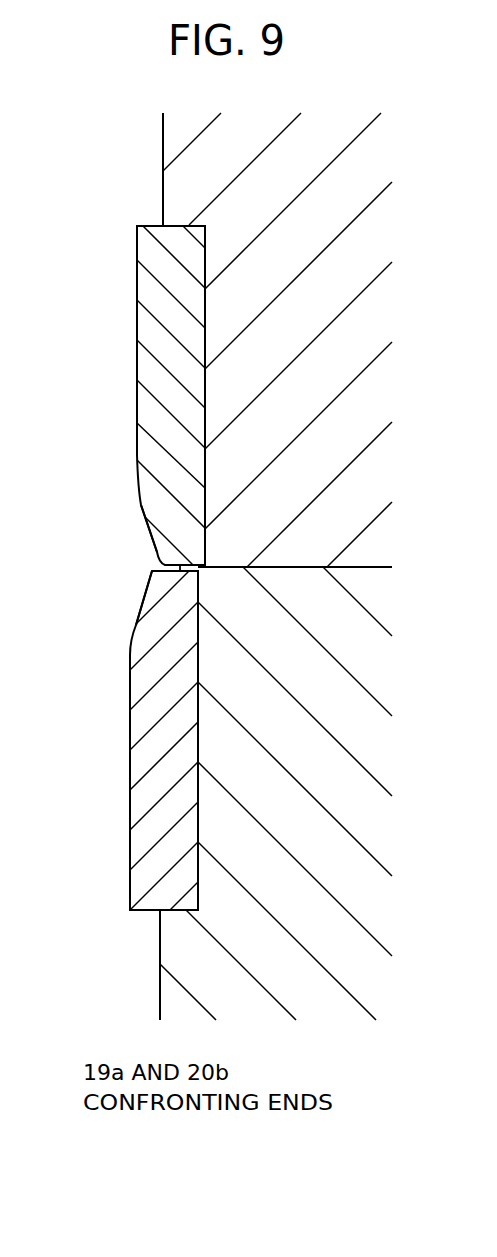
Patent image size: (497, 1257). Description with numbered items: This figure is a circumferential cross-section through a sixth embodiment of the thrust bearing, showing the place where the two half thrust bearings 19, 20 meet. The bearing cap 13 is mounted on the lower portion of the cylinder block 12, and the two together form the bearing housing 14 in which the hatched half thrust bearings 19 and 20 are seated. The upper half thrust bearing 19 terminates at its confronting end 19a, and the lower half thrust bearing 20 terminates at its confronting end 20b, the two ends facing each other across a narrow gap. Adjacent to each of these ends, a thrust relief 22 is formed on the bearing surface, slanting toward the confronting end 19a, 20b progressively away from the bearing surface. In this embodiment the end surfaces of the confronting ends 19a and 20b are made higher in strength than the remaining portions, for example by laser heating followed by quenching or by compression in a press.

The cylinder block 12 is at (163, 193).
The bearing cap 13 is at (160, 980).
The bearing housing 14 is at (132, 146).
The half thrust bearing 19 is at (137, 334).
The confronting end 19a is at (182, 578).
The half thrust bearing 20 is at (130, 768).
The confronting end 20b is at (163, 568).
The thrust relief 22 is at (143, 517).